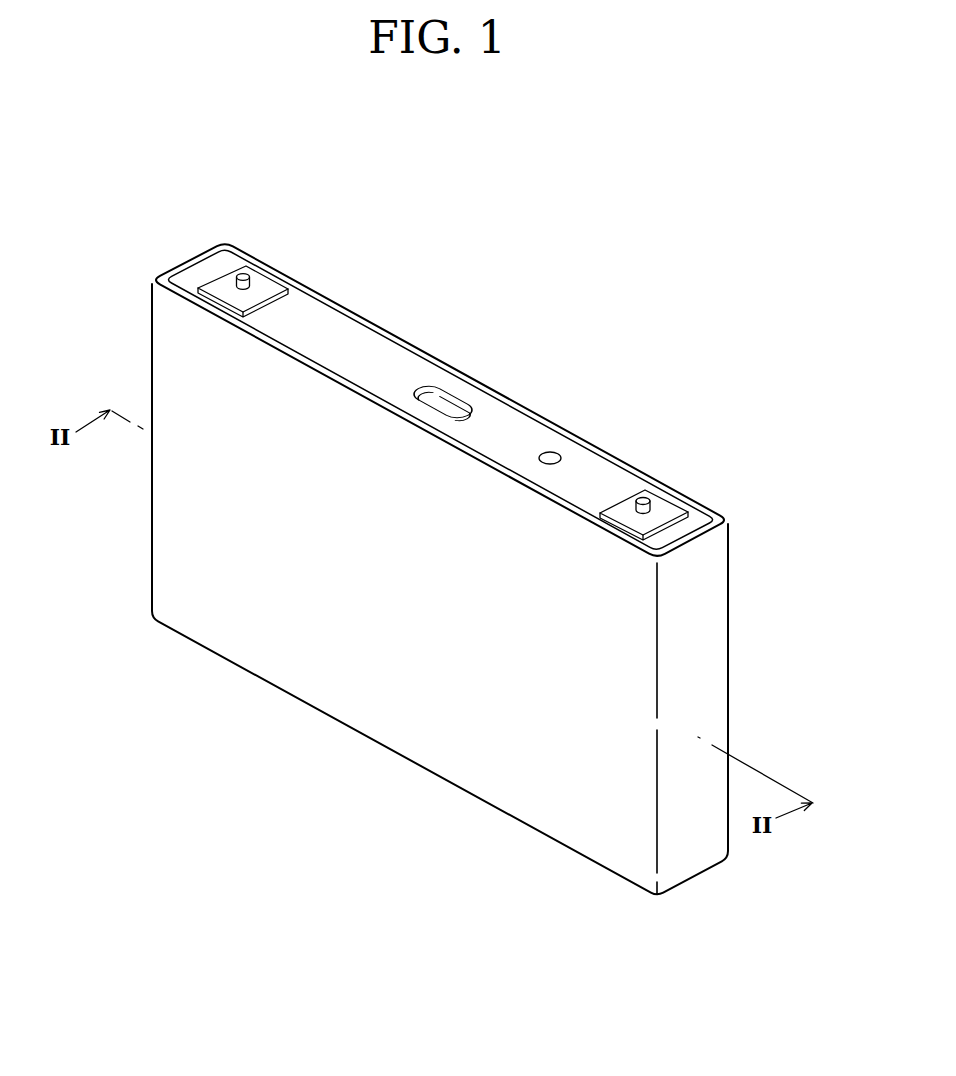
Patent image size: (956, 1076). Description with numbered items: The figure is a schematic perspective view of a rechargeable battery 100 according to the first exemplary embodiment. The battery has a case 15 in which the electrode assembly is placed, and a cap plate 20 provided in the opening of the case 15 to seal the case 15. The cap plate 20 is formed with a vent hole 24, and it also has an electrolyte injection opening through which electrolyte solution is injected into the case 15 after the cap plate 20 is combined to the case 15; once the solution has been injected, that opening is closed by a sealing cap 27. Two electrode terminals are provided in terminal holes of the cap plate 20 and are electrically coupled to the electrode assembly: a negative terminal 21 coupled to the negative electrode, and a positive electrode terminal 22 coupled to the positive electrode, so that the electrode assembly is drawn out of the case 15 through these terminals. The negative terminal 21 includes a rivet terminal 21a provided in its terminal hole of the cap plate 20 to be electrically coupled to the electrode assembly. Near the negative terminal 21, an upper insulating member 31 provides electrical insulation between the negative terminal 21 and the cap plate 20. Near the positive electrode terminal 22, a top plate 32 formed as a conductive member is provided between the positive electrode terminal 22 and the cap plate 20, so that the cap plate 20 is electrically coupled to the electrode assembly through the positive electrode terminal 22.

The rechargeable battery 100 is at (460, 526).
The case 15 is at (351, 702).
The cap plate 20 is at (327, 330).
The negative terminal 21 is at (224, 238).
The rivet terminal 21a is at (243, 273).
The positive electrode terminal 22 is at (697, 514).
The vent hole 24 is at (429, 383).
The sealing cap 27 is at (550, 456).
The upper insulating member 31 is at (218, 287).
The top plate 32 is at (668, 528).